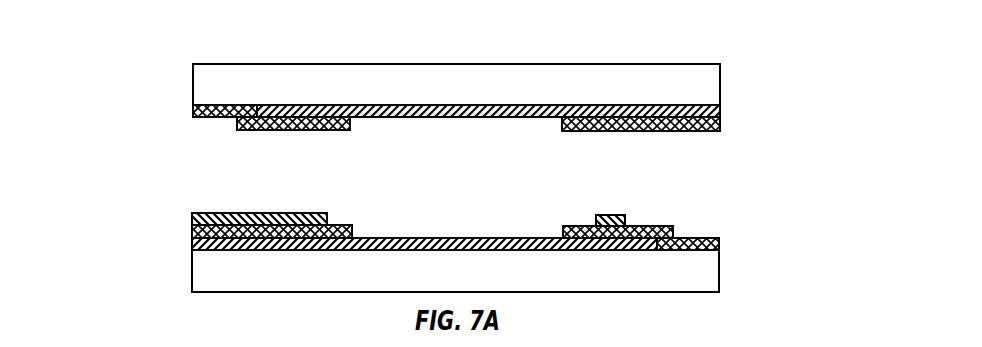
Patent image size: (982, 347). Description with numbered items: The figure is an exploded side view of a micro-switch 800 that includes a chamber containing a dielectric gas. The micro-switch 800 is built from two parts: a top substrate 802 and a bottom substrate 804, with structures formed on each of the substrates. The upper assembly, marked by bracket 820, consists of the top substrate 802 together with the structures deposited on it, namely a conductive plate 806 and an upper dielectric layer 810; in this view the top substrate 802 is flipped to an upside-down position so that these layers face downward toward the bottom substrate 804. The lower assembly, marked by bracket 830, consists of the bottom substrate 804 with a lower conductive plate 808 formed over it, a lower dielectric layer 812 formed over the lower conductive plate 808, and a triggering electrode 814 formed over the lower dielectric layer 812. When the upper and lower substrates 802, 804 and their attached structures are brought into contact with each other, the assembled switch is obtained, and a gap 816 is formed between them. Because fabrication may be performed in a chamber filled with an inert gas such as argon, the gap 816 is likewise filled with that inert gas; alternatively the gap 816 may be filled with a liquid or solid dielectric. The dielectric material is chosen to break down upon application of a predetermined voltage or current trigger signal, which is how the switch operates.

The micro-switch 800 is at (731, 59).
The top substrate 802 is at (713, 91).
The bottom substrate 804 is at (713, 272).
The conductive plate 806 is at (720, 113).
The lower conductive plate 808 is at (605, 250).
The upper dielectric layer 810 is at (193, 109).
The lower dielectric layer 812 is at (192, 228).
The triggering electrode 814 is at (222, 213).
The gap 816 is at (537, 197).
The upper subassembly 820 is at (120, 60).
The lower subassembly 830 is at (120, 212).